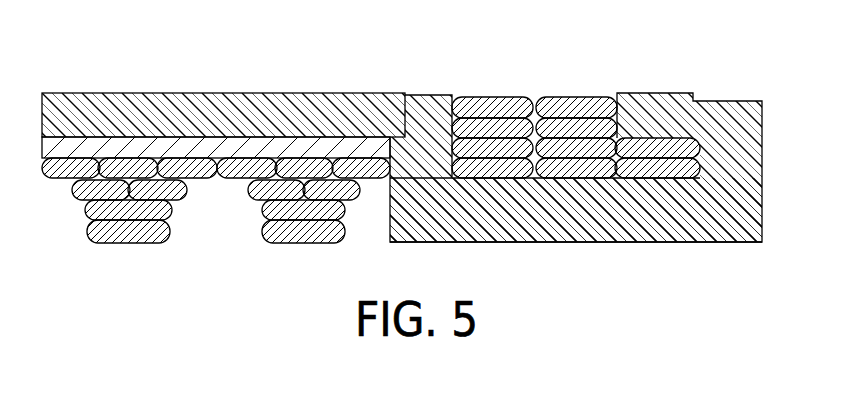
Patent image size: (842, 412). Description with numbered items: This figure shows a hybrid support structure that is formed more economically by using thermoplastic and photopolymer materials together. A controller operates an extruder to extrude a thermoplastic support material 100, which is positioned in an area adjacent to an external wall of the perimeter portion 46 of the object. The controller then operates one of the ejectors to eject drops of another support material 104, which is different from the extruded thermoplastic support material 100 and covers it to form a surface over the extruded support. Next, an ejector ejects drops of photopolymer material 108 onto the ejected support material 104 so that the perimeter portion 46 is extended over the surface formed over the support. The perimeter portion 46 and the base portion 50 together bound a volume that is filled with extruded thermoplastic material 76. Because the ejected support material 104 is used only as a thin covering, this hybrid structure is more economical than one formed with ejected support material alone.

The photopolymer material 108 is at (111, 93).
The ejected support material 104 is at (203, 145).
The extruded thermoplastic support material 100 is at (260, 232).
The perimeter portion 46 is at (428, 95).
The base portion 50 is at (563, 243).
The thermoplastic material 76 is at (575, 97).